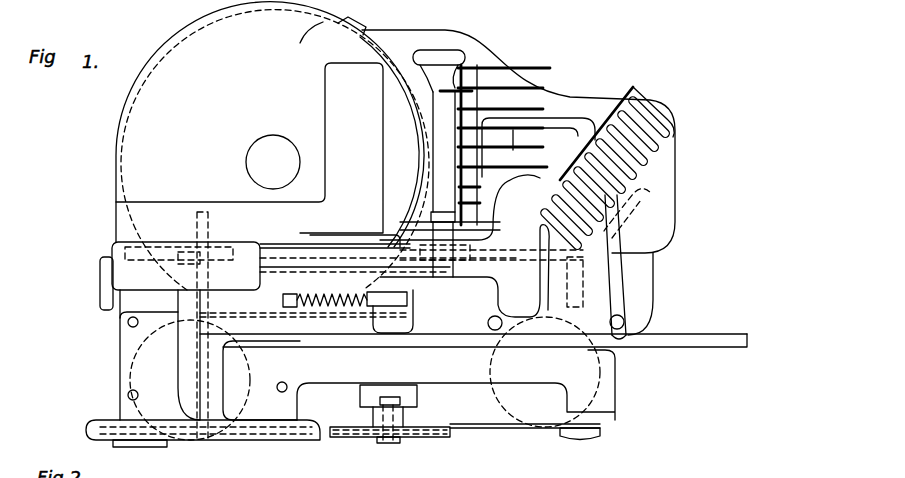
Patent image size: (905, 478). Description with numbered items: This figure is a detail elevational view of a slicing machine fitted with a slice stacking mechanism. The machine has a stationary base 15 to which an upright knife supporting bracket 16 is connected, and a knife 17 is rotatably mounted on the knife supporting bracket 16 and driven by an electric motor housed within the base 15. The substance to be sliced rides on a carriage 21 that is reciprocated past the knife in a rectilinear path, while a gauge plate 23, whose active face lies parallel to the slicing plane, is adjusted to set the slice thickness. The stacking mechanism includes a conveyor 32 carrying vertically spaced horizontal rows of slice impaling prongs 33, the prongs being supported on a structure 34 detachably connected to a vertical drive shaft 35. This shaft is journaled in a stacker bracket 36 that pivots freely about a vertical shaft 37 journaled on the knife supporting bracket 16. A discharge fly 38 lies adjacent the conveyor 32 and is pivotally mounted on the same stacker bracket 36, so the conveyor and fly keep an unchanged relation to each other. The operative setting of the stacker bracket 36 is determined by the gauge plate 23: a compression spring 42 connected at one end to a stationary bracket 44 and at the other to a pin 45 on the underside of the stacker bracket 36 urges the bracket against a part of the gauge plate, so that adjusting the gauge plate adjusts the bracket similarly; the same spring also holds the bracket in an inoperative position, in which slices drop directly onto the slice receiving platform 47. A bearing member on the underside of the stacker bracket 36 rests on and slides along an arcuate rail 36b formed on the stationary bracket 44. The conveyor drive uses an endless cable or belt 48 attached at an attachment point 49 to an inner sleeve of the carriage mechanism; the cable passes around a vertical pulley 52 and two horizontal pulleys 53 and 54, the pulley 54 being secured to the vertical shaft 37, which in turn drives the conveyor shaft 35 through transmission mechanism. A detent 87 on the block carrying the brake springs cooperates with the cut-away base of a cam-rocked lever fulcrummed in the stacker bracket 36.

The stationary base 15 is at (606, 394).
The knife supporting bracket 16 is at (148, 108).
The knife 17 is at (345, 24).
The carriage 21 is at (650, 196).
The gauge plate 23 is at (675, 150).
The conveyor 32 is at (500, 68).
The slice impaling prongs 33 is at (537, 67).
The structure 34 is at (460, 235).
The vertical drive shaft 35 is at (410, 90).
The stacker bracket 36 is at (545, 283).
The arcuate rail 36b is at (400, 292).
The vertical shaft 37 is at (197, 224).
The discharge fly 38 is at (633, 92).
The compression spring 42 is at (315, 308).
The stationary bracket 44 is at (358, 334).
The pin 45 is at (285, 290).
The slice receiving platform 47 is at (705, 345).
The endless cable or belt 48 is at (458, 317).
The attachment point 49 is at (480, 312).
The vertical pulley 52 is at (520, 428).
The horizontal pulley 53 is at (428, 440).
The horizontal pulley 54 is at (284, 438).
The detent 87 is at (334, 98).